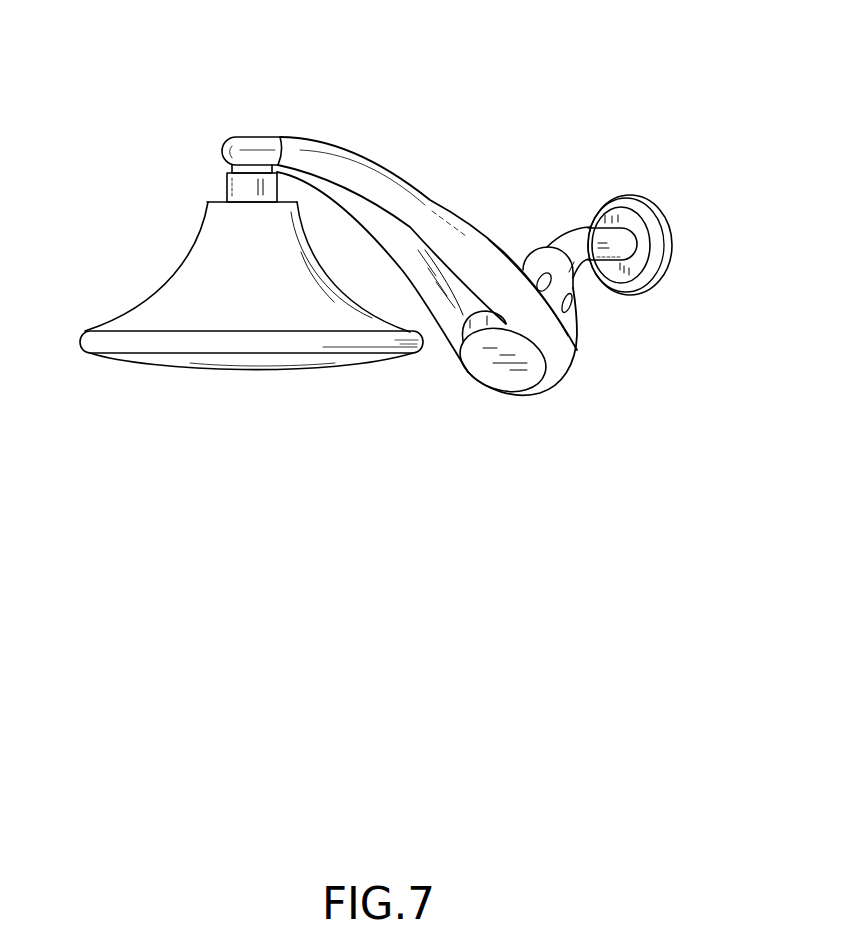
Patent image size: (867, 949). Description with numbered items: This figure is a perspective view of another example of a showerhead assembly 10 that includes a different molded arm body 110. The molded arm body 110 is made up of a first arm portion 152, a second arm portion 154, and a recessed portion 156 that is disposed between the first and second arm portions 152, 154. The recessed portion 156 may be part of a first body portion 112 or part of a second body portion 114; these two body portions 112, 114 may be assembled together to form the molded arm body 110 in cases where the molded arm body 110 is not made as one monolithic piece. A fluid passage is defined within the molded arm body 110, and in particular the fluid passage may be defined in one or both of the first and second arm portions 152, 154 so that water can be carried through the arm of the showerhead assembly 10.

The showerhead assembly 10 is at (405, 456).
The molded arm body 110 is at (352, 116).
The first body portion 112 is at (405, 164).
The second body portion 114 is at (550, 394).
The first arm portion 152 is at (468, 248).
The second arm portion 154 is at (424, 305).
The recessed portion 156 is at (468, 292).